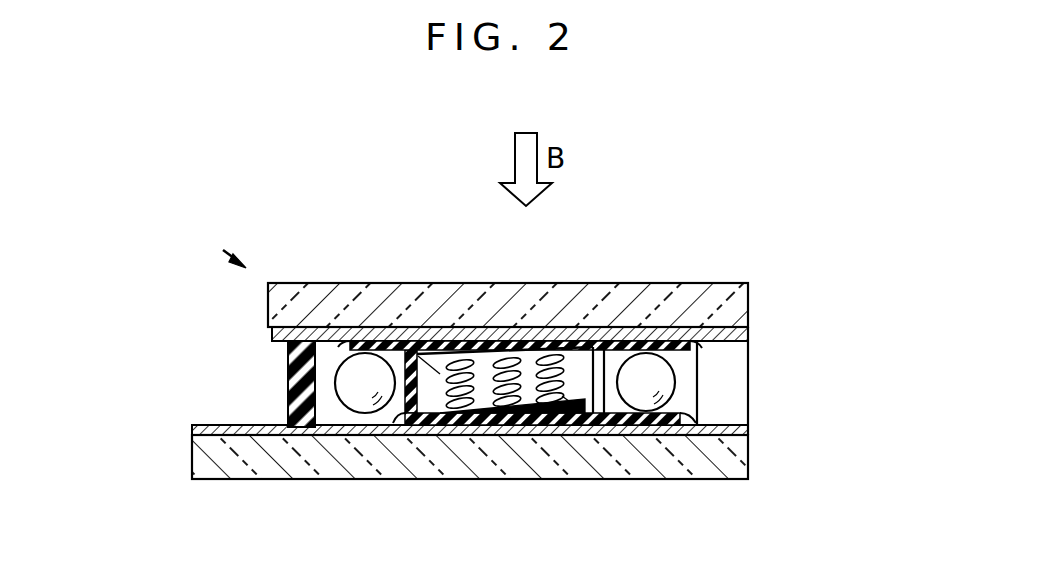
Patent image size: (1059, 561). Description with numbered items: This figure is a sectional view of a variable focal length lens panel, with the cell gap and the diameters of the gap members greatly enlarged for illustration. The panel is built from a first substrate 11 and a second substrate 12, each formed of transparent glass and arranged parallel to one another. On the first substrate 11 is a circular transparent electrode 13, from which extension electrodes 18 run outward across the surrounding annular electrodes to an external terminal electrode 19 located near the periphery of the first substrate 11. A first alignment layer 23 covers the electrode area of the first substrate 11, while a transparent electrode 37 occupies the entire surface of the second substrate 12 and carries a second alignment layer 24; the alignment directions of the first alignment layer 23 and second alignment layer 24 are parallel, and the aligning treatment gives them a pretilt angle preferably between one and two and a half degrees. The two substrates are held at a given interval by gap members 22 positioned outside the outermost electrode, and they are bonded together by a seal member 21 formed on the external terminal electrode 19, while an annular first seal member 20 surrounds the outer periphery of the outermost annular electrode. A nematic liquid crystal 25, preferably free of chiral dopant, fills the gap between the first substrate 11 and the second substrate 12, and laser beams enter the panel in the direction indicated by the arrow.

The first substrate 11 is at (300, 470).
The second substrate 12 is at (320, 282).
The circular transparent electrode 13 is at (558, 430).
The extension electrodes 18 is at (377, 432).
The external terminal electrode 19 is at (227, 436).
The first seal member 20 is at (392, 340).
The seal member 21 is at (284, 398).
The gap members 22 is at (345, 372).
The first alignment layer 23 is at (463, 423).
The second alignment layer 24 is at (470, 330).
The nematic liquid crystal 25 is at (508, 430).
The transparent electrode 37 is at (610, 367).